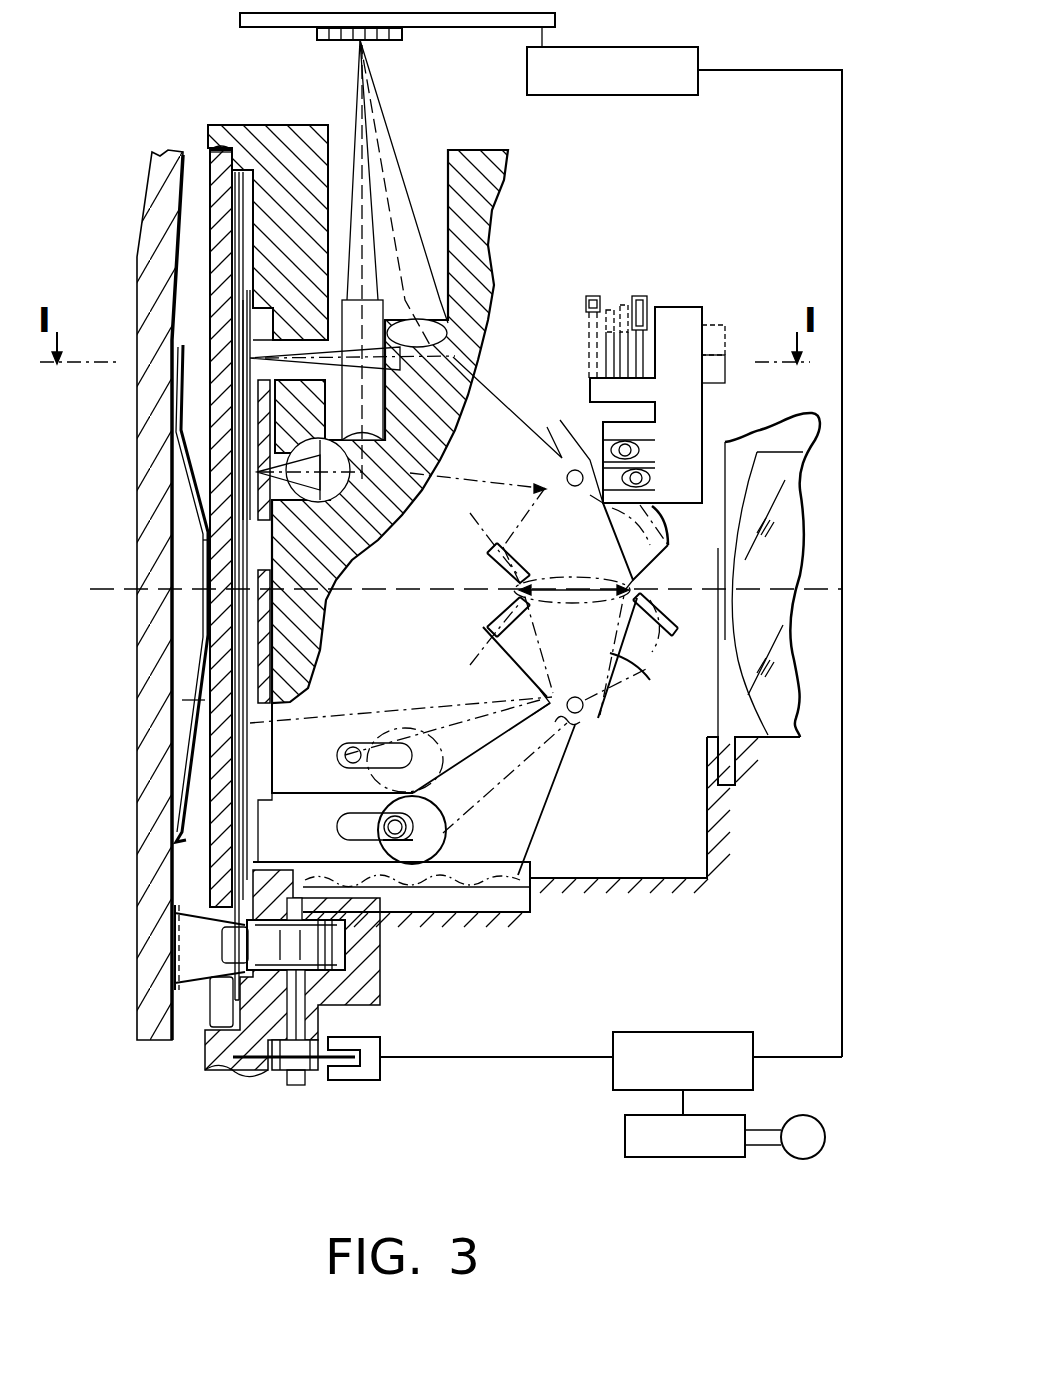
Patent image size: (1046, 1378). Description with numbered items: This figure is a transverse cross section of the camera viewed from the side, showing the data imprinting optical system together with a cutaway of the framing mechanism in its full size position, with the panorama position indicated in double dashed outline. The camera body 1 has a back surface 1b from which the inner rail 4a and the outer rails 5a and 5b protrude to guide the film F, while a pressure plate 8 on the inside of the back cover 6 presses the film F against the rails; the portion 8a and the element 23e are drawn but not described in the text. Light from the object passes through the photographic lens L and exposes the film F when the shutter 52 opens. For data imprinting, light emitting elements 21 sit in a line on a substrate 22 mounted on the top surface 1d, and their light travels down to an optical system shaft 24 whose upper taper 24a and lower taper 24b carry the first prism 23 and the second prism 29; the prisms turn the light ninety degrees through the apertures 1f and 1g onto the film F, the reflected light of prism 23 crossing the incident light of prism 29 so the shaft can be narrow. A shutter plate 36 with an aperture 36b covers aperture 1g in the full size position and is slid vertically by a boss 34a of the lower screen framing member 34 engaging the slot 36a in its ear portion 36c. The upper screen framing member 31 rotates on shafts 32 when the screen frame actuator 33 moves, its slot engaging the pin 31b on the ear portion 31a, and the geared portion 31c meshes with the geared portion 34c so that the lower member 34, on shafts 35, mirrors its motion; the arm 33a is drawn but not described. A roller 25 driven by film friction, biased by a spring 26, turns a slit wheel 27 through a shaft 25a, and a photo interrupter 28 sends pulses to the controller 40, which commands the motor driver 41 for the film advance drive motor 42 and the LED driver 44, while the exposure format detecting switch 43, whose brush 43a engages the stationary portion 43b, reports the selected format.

The camera body 1 is at (483, 192).
The back surface 1b is at (210, 135).
The top surface 1d is at (230, 127).
The aperture 1f is at (265, 338).
The aperture 1g is at (257, 507).
The inner rail 4a is at (255, 300).
The outer rail 5a is at (228, 170).
The outer rail 5b is at (265, 1040).
The back cover 6 is at (143, 787).
The pressure plate 8 is at (210, 850).
The spring contact portion 8a is at (188, 697).
The film F is at (247, 888).
The light emitting elements 21 is at (342, 46).
The substrate 22 is at (282, 26).
The first prism 23 is at (437, 295).
The board 23e is at (262, 386).
The optical system shaft 24 is at (403, 145).
The upper taper 24a is at (413, 382).
The lower taper 24b is at (405, 472).
The roller 25 is at (327, 950).
The shaft 25a is at (296, 996).
The spring 26 is at (192, 948).
The slit wheel 27 is at (318, 1072).
The photo interrupter 28 is at (372, 1080).
The second prism 29 is at (360, 490).
The upper screen framing member 31 is at (533, 527).
The ear portion 31a is at (590, 467).
The pin 31b is at (645, 480).
The geared portion 31c is at (487, 566).
The shafts 32 is at (566, 474).
The screen frame actuator 33 is at (722, 370).
The arm 33a is at (592, 487).
The lower screen framing member 34 is at (580, 655).
The boss 34a is at (415, 792).
The geared portion 34c is at (487, 614).
The shafts 35 is at (582, 715).
The shutter plate 36 is at (255, 626).
The slot 36a is at (405, 838).
The aperture 36b is at (260, 547).
The ear portion 36c is at (298, 807).
The controller 40 is at (680, 1034).
The motor driver 41 is at (625, 1132).
The film advance drive motor 42 is at (806, 1116).
The exposure format detecting switch 43 is at (710, 244).
The brush 43a is at (577, 340).
The stationary portion 43b is at (637, 293).
The LED driver 44 is at (650, 96).
The shutter 52 is at (740, 782).
The photographic lens L is at (790, 745).